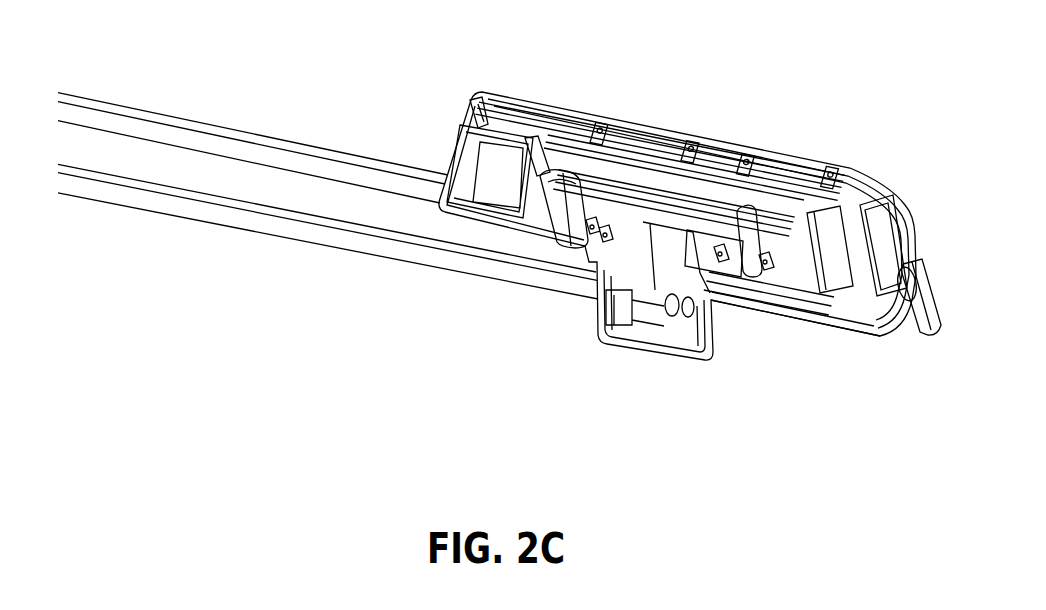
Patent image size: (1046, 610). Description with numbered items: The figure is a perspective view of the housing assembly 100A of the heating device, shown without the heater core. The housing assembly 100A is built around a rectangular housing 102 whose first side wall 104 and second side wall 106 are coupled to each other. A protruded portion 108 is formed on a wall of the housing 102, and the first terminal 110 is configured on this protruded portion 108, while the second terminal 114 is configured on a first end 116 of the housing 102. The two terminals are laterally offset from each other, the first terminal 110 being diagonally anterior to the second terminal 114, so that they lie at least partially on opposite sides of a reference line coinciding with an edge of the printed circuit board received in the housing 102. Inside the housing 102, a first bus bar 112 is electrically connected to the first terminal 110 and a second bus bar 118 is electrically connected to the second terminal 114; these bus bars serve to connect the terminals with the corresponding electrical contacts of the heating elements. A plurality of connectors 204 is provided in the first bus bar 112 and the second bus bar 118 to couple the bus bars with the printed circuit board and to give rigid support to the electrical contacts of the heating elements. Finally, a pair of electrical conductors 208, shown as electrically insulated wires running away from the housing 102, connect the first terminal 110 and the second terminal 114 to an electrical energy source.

The housing assembly 100A is at (693, 470).
The housing 102 is at (848, 342).
The first side wall 104 is at (822, 325).
The second side wall 106 is at (747, 160).
The protruded portion 108 is at (683, 357).
The first terminal 110 is at (663, 313).
The first bus bar 112 is at (672, 190).
The second terminal 114 is at (527, 203).
The first end 116 is at (448, 142).
The second bus bar 118 is at (685, 160).
The connectors 204 is at (588, 233).
The electrical conductors 208 is at (238, 135).